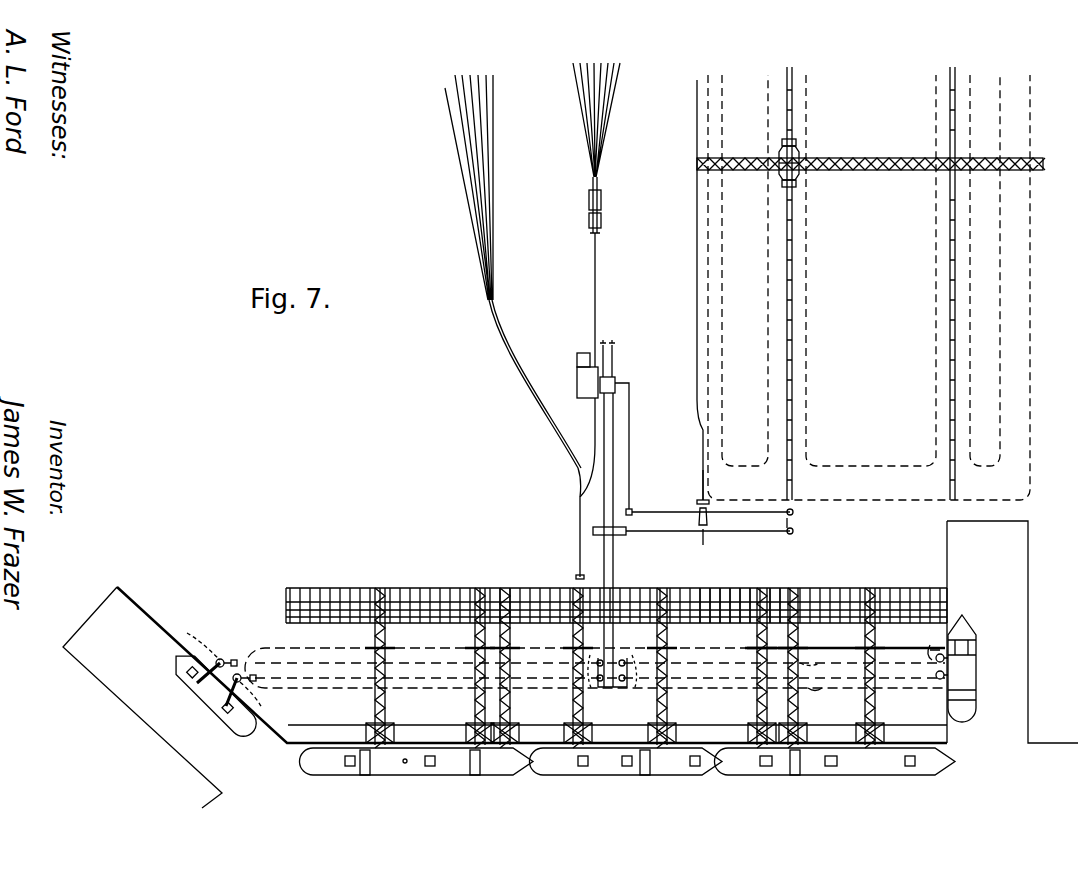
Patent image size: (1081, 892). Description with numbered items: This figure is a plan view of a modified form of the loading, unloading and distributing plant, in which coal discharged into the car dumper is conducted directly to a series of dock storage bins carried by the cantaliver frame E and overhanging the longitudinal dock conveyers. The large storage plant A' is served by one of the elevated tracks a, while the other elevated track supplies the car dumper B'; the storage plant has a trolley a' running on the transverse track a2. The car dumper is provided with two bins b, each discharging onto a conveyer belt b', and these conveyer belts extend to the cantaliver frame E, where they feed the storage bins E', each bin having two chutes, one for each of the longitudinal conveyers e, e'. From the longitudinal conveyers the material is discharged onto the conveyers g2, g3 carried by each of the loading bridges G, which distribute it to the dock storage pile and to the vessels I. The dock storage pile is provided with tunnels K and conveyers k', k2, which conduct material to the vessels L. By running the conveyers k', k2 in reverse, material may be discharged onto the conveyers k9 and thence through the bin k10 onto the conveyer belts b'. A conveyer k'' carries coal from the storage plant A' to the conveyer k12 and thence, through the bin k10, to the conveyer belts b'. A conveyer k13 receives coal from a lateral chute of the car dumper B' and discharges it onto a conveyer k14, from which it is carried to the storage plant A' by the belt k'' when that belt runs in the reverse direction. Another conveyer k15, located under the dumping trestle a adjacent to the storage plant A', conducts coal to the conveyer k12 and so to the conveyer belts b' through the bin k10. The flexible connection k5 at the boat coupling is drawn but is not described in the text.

The elevated tracks a is at (574, 281).
The trolley a' is at (802, 176).
The transverse track a2 is at (846, 173).
The large storage plant A' is at (869, 287).
The car dumper B' is at (568, 374).
The bins b is at (618, 366).
The conveyer belts b' is at (548, 439).
The conveyer k13 is at (629, 423).
The conveyer k'' is at (871, 283).
The conveyer k15 is at (703, 469).
The conveyer k14 is at (703, 493).
The bin k10 is at (620, 536).
The conveyer k12 is at (745, 528).
The longitudinal conveyer e is at (615, 588).
The storage bin E' is at (616, 589).
The longitudinal conveyer e' is at (746, 589).
The flexible hose k5 is at (216, 656).
The tunnels K is at (242, 660).
The vessels L is at (985, 673).
The conveyer k' is at (595, 682).
The conveyers k9 is at (615, 687).
The cantaliver frame E is at (622, 540).
The conveyer k2 is at (703, 680).
The conveyer g2 is at (835, 648).
The conveyer g3 is at (845, 662).
The loading bridges G is at (808, 689).
The vessels I is at (510, 770).